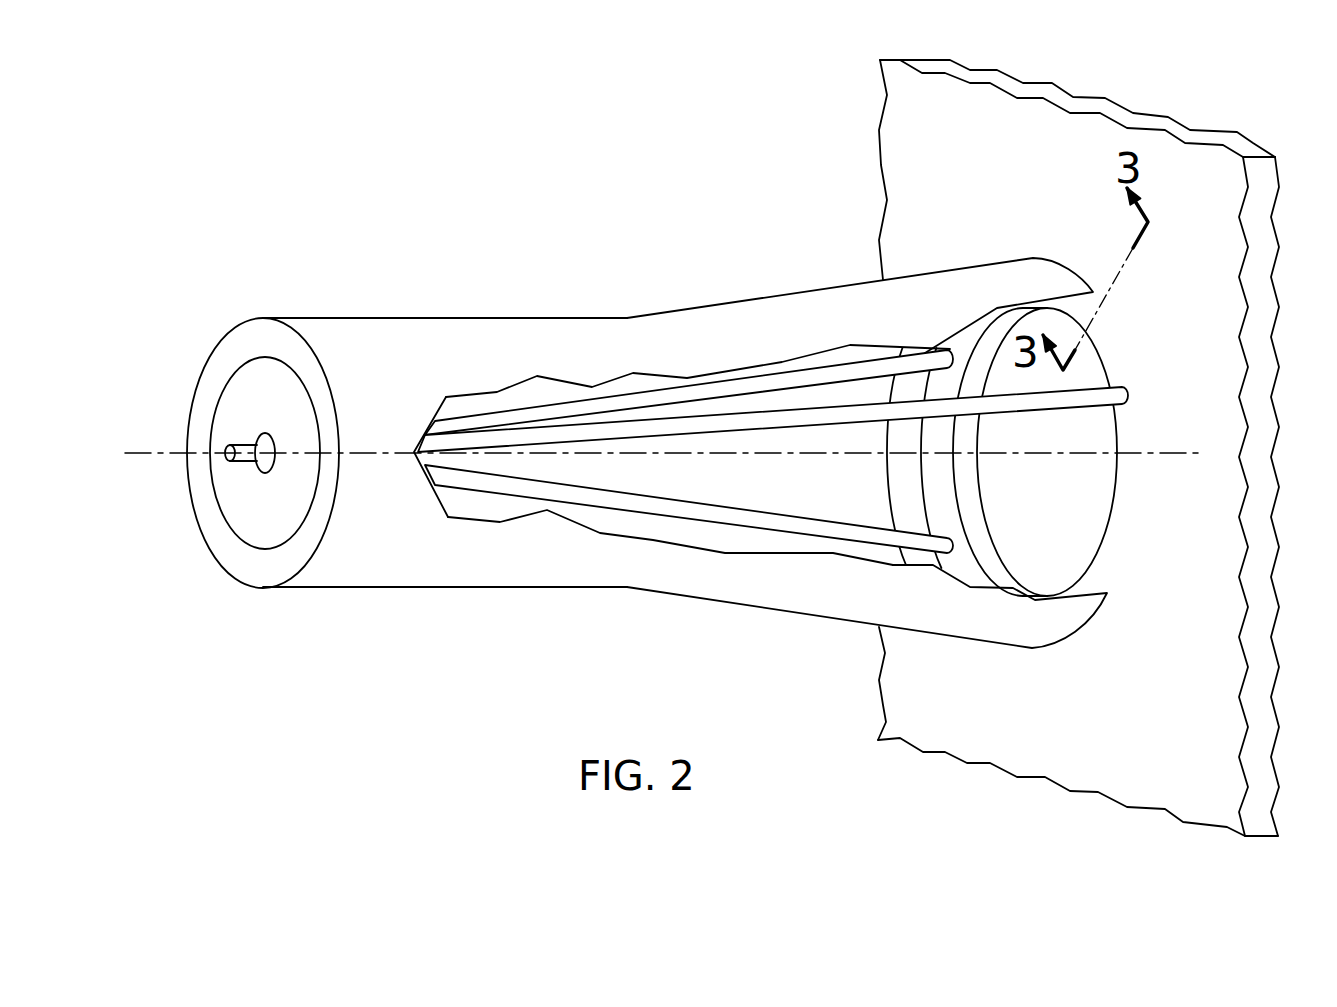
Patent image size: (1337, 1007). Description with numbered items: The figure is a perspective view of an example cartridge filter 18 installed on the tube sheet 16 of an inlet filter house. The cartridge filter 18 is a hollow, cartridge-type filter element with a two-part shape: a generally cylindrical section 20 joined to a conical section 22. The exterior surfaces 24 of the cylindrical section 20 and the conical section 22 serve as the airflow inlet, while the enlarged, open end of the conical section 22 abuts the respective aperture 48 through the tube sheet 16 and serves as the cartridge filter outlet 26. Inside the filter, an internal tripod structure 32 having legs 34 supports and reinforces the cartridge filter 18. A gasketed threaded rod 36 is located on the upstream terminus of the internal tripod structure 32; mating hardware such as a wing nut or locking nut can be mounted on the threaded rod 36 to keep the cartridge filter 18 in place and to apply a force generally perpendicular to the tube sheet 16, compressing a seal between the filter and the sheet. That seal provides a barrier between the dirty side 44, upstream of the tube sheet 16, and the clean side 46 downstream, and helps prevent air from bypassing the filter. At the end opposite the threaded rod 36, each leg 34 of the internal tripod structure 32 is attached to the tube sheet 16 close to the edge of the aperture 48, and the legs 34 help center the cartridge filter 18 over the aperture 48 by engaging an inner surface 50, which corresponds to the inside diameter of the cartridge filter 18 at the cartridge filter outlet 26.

The tube sheet 16 is at (1265, 209).
The cartridge filter 18 is at (639, 463).
The cylindrical section 20 is at (407, 510).
The conical section 22 is at (867, 647).
The exterior surfaces 24 is at (746, 448).
The cartridge filter outlet 26 is at (1091, 452).
The internal tripod structure 32 is at (682, 488).
The legs 34 is at (694, 384).
The threaded rod 36 is at (250, 450).
The dirty side 44 is at (640, 277).
The clean side 46 is at (783, 493).
The aperture 48 is at (1080, 503).
The inner surface 50 is at (900, 494).